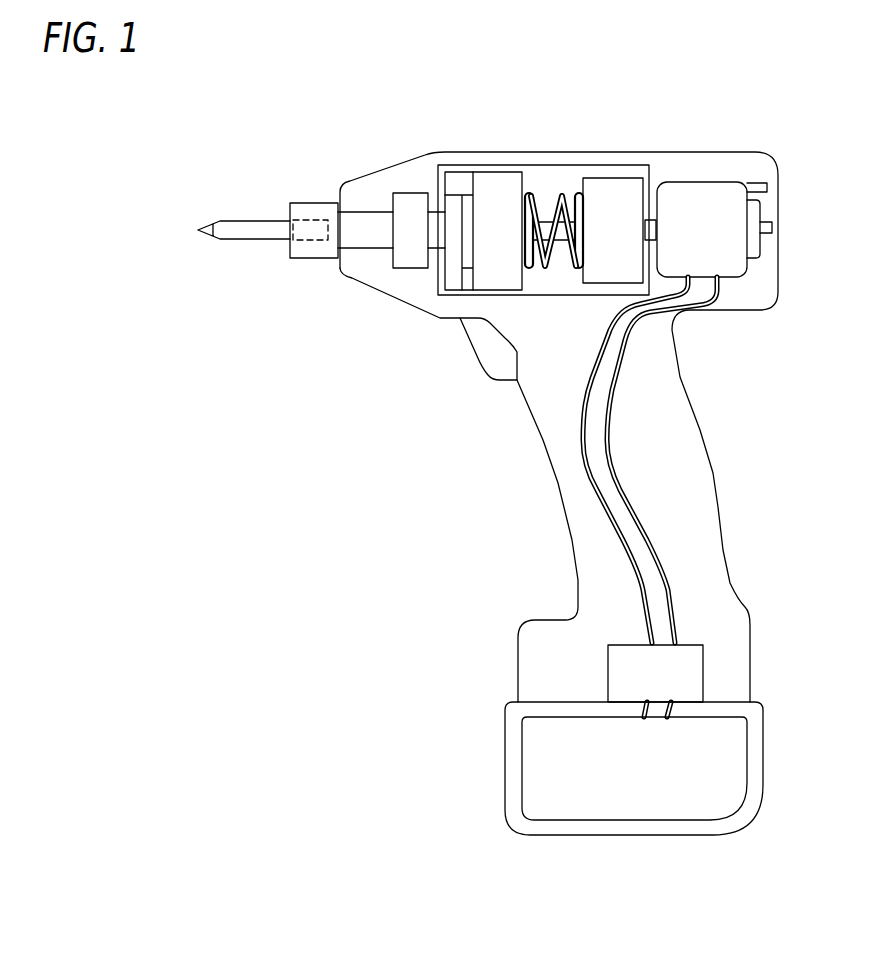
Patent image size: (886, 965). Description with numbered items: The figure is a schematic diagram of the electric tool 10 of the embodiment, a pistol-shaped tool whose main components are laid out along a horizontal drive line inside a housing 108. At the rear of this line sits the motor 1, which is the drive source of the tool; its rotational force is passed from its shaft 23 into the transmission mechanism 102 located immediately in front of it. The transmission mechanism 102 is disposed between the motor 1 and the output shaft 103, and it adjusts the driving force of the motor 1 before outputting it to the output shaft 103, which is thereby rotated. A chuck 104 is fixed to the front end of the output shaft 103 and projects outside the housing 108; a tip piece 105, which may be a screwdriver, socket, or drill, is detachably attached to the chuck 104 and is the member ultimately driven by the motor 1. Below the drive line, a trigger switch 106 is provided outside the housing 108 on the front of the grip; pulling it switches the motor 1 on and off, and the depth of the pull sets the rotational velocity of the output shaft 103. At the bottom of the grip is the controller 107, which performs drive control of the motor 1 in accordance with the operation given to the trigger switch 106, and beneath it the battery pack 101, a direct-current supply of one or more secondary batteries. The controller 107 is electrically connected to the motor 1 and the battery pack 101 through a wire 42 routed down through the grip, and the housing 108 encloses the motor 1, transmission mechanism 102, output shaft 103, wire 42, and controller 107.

The electric tool 10 is at (262, 125).
The motor 1 is at (710, 190).
The shaft 23 is at (650, 230).
The wire 42 is at (628, 493).
The battery pack 101 is at (722, 762).
The transmission mechanism 102 is at (553, 167).
The output shaft 103 is at (370, 238).
The chuck 104 is at (315, 205).
The tip piece 105 is at (250, 225).
The trigger switch 106 is at (483, 348).
The controller 107 is at (695, 672).
The housing 108 is at (773, 302).